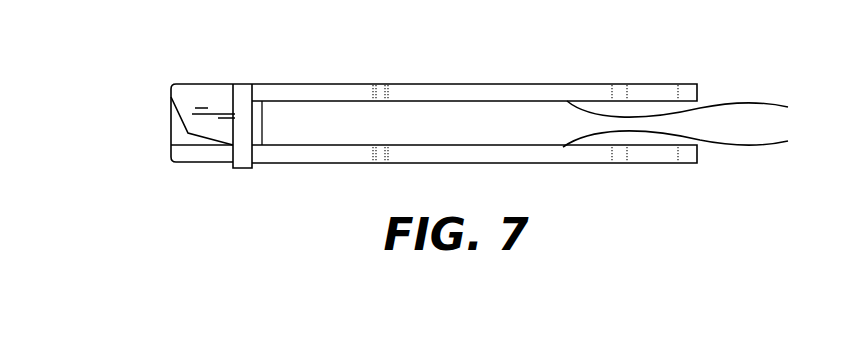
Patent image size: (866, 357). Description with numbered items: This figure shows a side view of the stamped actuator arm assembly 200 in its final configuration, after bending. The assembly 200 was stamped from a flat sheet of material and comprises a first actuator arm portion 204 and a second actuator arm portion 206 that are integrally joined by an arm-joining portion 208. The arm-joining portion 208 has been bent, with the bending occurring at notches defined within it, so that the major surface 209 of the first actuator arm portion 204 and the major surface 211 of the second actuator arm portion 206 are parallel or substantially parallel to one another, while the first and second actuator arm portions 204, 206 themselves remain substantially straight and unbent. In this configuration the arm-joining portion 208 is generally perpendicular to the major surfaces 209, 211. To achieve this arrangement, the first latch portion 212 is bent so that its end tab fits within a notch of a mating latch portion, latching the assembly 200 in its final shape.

The actuator arm assembly 200 is at (130, 134).
The first actuator arm portion 204 is at (553, 85).
The second actuator arm portion 206 is at (563, 163).
The arm-joining portion 208 is at (288, 136).
The major surface of the first actuator arm portion 209 is at (702, 114).
The major surface of the second actuator arm portion 211 is at (700, 141).
The first latch portion 212 is at (215, 97).